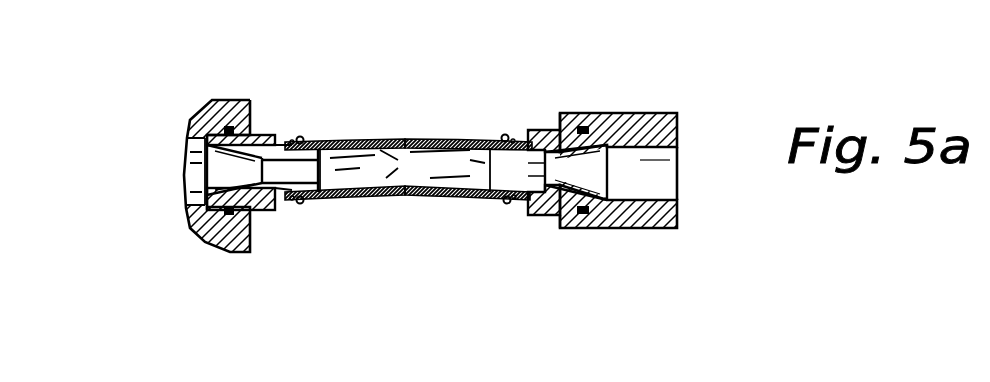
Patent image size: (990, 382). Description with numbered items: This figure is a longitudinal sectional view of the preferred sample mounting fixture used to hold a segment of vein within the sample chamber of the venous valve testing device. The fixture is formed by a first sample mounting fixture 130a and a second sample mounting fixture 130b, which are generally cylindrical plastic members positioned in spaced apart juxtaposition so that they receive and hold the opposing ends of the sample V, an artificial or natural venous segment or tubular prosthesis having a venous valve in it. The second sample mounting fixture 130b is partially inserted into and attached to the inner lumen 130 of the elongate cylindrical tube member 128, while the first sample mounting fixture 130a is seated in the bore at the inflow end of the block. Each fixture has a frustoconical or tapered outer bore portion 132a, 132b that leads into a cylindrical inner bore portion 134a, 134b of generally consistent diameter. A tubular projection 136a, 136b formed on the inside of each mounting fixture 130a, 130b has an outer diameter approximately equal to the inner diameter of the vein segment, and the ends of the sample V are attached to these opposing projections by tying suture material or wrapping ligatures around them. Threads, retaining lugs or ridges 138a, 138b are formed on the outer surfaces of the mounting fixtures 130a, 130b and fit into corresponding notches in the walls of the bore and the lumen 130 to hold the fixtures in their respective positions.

The elongate cylindrical tube member 128 is at (662, 228).
The inner lumen 130 is at (654, 160).
The first sample mounting fixture 130a is at (263, 123).
The second sample mounting fixture 130b is at (544, 130).
The frustoconical outer bore portion 132a is at (228, 172).
The frustoconical outer bore portion 132b is at (603, 172).
The cylindrical inner bore portion 134a is at (318, 194).
The cylindrical inner bore portion 134b is at (548, 188).
The tubular projection 136a is at (300, 137).
The tubular projection 136b is at (510, 134).
The retaining lugs 138a is at (237, 250).
The retaining lugs 138b is at (608, 112).
The sample V is at (407, 194).